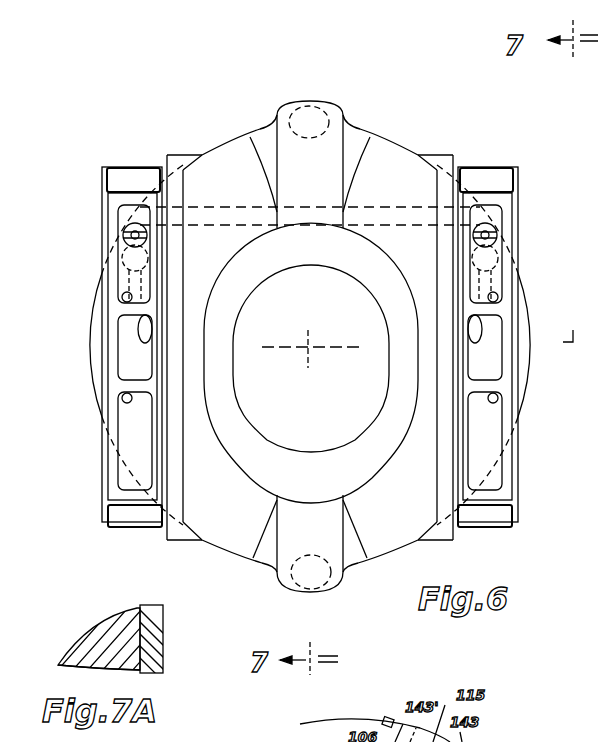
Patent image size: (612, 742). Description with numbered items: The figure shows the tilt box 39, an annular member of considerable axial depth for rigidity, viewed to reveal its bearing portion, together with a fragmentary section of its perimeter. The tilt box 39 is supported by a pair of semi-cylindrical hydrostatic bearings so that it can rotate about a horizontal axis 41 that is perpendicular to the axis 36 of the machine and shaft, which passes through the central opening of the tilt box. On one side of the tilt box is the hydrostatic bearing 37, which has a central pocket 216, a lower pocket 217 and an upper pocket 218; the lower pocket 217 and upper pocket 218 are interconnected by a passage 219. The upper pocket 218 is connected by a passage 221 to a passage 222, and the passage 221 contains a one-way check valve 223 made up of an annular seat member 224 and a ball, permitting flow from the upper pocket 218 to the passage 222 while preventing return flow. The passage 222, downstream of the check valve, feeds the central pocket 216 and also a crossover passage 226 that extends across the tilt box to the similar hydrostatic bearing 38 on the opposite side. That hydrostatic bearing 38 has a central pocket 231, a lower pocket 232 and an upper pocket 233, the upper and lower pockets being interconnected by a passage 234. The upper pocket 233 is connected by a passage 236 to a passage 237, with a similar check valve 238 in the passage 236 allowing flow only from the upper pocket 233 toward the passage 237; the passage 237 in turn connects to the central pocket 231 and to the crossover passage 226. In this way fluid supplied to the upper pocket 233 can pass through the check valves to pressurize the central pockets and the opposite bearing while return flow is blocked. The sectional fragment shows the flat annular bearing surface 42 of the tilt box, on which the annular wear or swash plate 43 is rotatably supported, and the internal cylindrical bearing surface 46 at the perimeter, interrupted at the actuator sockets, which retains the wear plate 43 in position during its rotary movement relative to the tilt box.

In FIG. 6, the axis of the machine and shaft 36 is at (312, 349).
In FIG. 6, the horizontal axis 41 is at (290, 346).
In FIG. 6, the crossover passage 226 is at (403, 224).
In FIG. 6, the hydrostatic bearing 38 is at (115, 425).
In FIG. 6, the tilt box 39 is at (518, 232).
In FIG. 6, the upper pocket 233 is at (130, 214).
In FIG. 6, the check valve 238 is at (124, 232).
In FIG. 6, the passage 236 is at (150, 241).
In FIG. 6, the passage 237 is at (148, 268).
In FIG. 6, the passage 234 is at (120, 292).
In FIG. 6, the central pocket 231 is at (125, 375).
In FIG. 6, the lower pocket 232 is at (125, 480).
In FIG. 6, the one-way check valve 223 is at (490, 223).
In FIG. 6, the annular seat member 224 is at (490, 243).
In FIG. 6, the passage 221 is at (477, 245).
In FIG. 6, the passage 222 is at (472, 278).
In FIG. 6, the upper pocket 218 is at (495, 297).
In FIG. 6, the passage 219 is at (500, 331).
In FIG. 6, the central pocket 216 is at (482, 362).
In FIG. 6, the hydrostatic bearing 37 is at (507, 387).
In FIG. 6, the lower pocket 217 is at (490, 444).
In FIG. 7A, the flat annular bearing surface 42 is at (148, 645).
In FIG. 7A, the internal cylindrical bearing surface 46 is at (165, 622).
In FIG. 7A, the annular wear or swash plate 43 is at (162, 656).